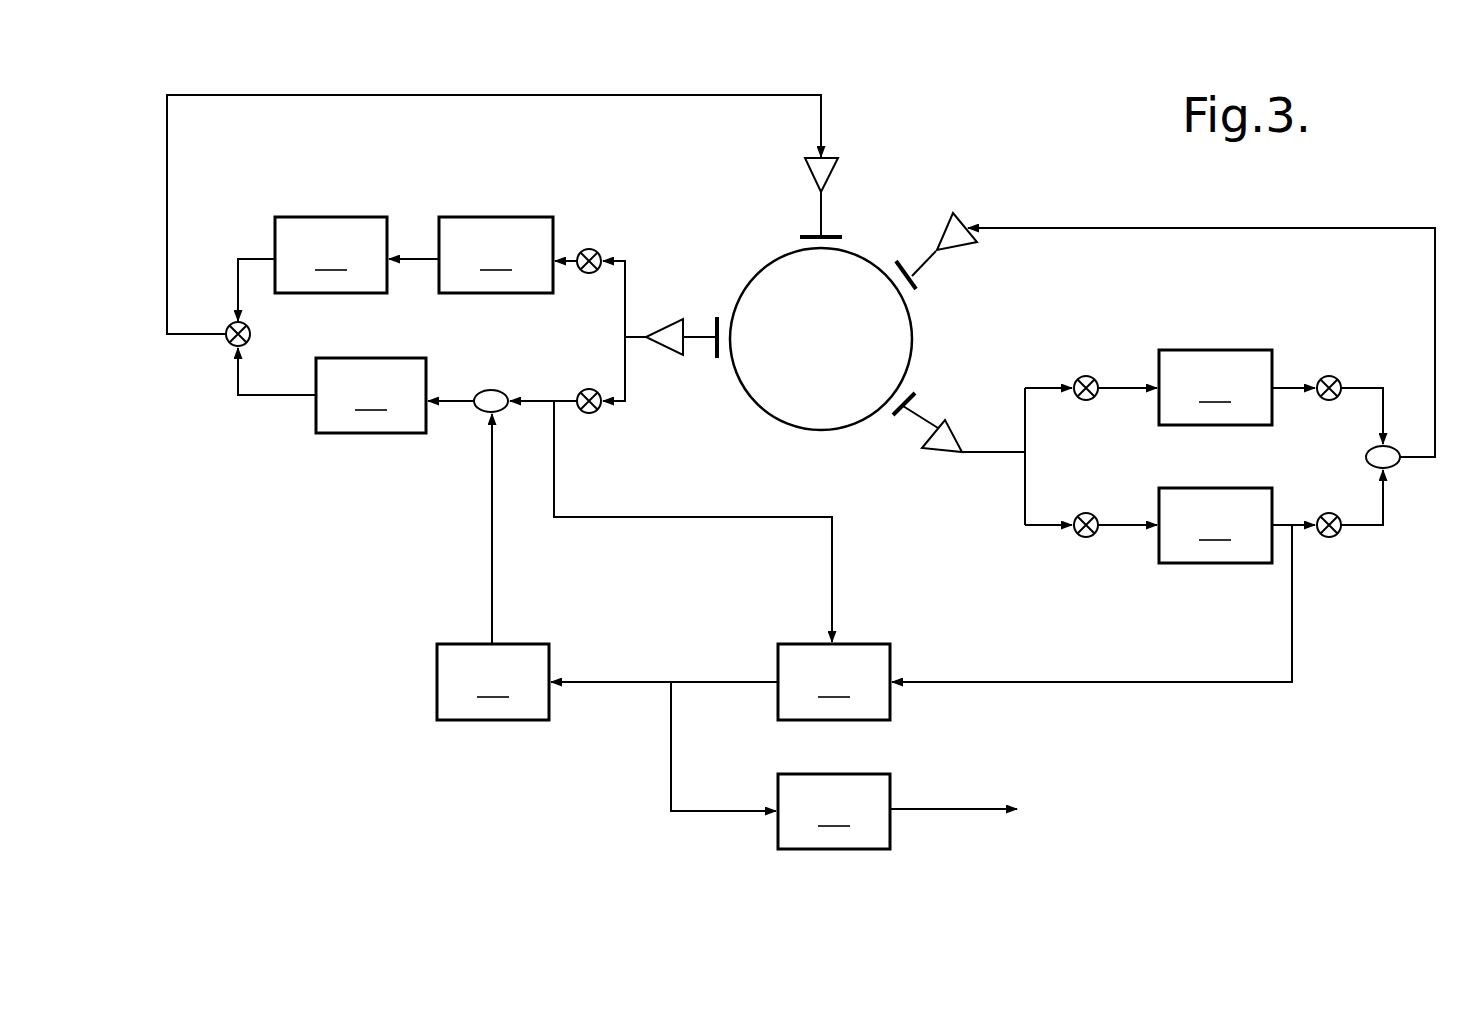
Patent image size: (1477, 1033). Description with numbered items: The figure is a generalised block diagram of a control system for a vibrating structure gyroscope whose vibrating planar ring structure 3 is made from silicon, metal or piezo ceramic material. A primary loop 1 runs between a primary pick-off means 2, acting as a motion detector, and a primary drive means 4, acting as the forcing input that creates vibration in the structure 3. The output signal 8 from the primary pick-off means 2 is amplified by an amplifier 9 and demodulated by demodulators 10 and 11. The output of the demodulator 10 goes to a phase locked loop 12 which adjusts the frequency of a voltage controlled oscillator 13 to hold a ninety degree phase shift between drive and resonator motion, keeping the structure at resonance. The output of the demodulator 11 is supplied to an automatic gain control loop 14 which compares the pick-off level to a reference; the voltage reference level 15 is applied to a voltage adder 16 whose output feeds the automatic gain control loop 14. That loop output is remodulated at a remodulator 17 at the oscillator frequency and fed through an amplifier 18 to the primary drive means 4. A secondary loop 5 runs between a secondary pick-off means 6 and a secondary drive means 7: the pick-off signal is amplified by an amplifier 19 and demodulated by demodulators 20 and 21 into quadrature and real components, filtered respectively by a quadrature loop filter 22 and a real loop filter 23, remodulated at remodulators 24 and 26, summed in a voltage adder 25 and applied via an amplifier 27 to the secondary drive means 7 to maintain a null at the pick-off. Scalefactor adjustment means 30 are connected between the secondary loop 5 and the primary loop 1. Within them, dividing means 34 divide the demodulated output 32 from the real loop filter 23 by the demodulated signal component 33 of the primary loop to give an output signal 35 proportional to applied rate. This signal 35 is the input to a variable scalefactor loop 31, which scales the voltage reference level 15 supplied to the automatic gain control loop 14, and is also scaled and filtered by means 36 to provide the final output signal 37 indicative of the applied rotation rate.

The primary loop 1 is at (223, 462).
The primary pick-off means 2 is at (717, 317).
The vibrating planar ring structure 3 is at (783, 423).
The primary drive means 4 is at (833, 237).
The secondary loop 5 is at (1403, 612).
The secondary pick-off means 6 is at (893, 415).
The secondary drive means 7 is at (897, 263).
The output signal 8 is at (697, 337).
The amplifier 9 is at (671, 319).
The demodulator 10 is at (590, 249).
The demodulator 11 is at (590, 413).
The phase locked loop 12 is at (471, 255).
The voltage controlled oscillator 13 is at (312, 269).
The automatic gain control loop 14 is at (332, 390).
The voltage reference level 15 is at (493, 492).
The voltage adder 16 is at (490, 390).
The remodulator 17 is at (232, 323).
The amplifier 18 is at (838, 158).
The amplifier 19 is at (938, 423).
The demodulator 20 is at (1087, 376).
The demodulator 21 is at (1086, 537).
The quadrature loop filter 22 is at (1237, 387).
The real loop filter 23 is at (1237, 525).
The remodulator 24 is at (1333, 377).
The voltage adder 25 is at (1395, 466).
The remodulator 26 is at (1343, 530).
The amplifier 27 is at (953, 213).
The scalefactor active adjustment means 30 is at (468, 778).
The variable scalefactor loop 31 is at (493, 682).
The demodulated output 32 is at (1292, 636).
The demodulated signal component 33 is at (573, 391).
The dividing means 34 is at (834, 682).
The output signal 35 is at (705, 681).
The scaling and filtering means 36 is at (834, 811).
The final output signal 37 is at (940, 809).